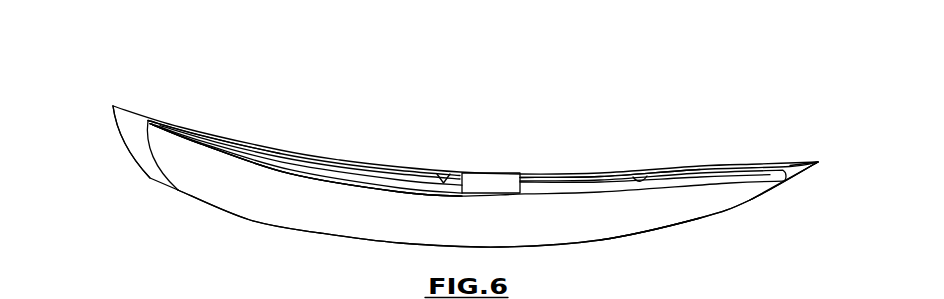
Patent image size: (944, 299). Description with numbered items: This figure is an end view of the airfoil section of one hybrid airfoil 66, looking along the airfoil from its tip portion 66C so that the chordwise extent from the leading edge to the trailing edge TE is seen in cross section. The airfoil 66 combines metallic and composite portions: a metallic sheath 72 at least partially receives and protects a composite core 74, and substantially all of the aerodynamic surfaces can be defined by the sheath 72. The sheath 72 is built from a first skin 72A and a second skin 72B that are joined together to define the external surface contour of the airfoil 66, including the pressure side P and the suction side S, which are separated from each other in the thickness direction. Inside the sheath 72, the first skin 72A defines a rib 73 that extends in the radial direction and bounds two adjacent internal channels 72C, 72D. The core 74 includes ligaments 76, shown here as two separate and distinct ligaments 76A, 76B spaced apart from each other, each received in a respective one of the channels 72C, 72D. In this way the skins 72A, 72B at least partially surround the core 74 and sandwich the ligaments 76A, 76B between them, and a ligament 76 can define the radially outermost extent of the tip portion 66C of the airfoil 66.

The airfoil 66 is at (95, 58).
The tip portion 66C is at (108, 115).
The trailing edge TE is at (818, 162).
The metallic sheath 72 is at (180, 112).
The first skin 72A is at (328, 158).
The second skin 72B is at (245, 205).
The internal channel 72C is at (448, 178).
The internal channel 72D is at (638, 180).
The rib 73 is at (498, 182).
The composite core 74 is at (380, 175).
The ligament 76 is at (413, 175).
The ligament 76A is at (306, 160).
The ligament 76B is at (548, 183).
The pressure side P is at (595, 175).
The suction side S is at (624, 227).